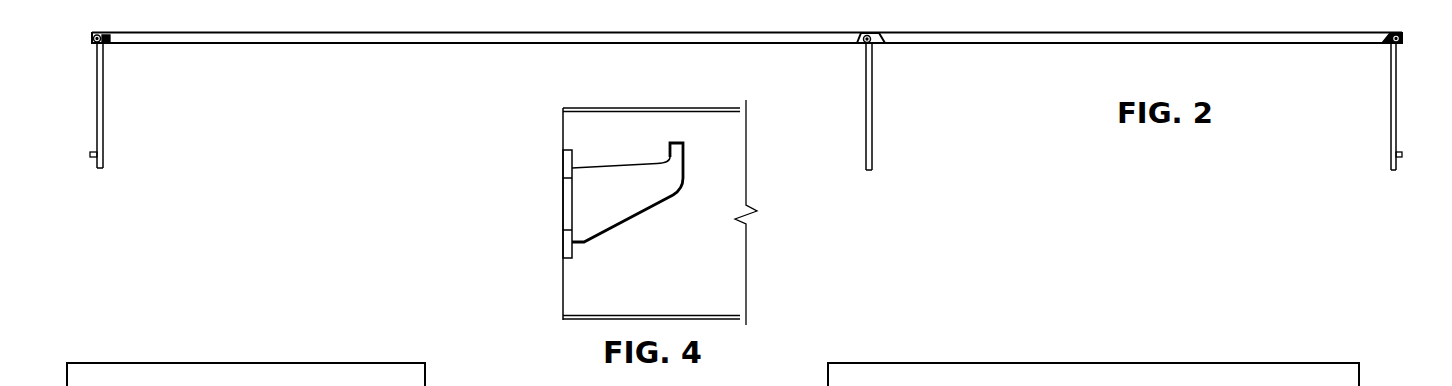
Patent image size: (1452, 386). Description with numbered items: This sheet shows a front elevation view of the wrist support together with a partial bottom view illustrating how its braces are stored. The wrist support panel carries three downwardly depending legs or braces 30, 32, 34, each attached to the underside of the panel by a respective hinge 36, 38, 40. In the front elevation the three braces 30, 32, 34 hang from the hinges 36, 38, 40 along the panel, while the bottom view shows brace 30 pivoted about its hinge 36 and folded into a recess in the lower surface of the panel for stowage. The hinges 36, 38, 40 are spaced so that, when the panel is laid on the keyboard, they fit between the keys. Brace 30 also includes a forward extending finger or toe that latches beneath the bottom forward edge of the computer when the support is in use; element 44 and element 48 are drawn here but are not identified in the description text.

In FIG. 2, the leg or brace 30 is at (103, 117).
In FIG. 4, the leg or brace 30 is at (613, 207).
In FIG. 2, the leg or brace 32 is at (873, 117).
In FIG. 2, the leg or brace 34 is at (1390, 117).
In FIG. 2, the hinge 36 is at (97, 45).
In FIG. 4, the hinge 36 is at (563, 201).
In FIG. 2, the hinge 38 is at (865, 47).
In FIG. 2, the hinge 40 is at (1398, 45).
In FIG. 4, the flange 44 is at (643, 200).
In FIG. 2, the base cabinet 48 is at (1065, 384).